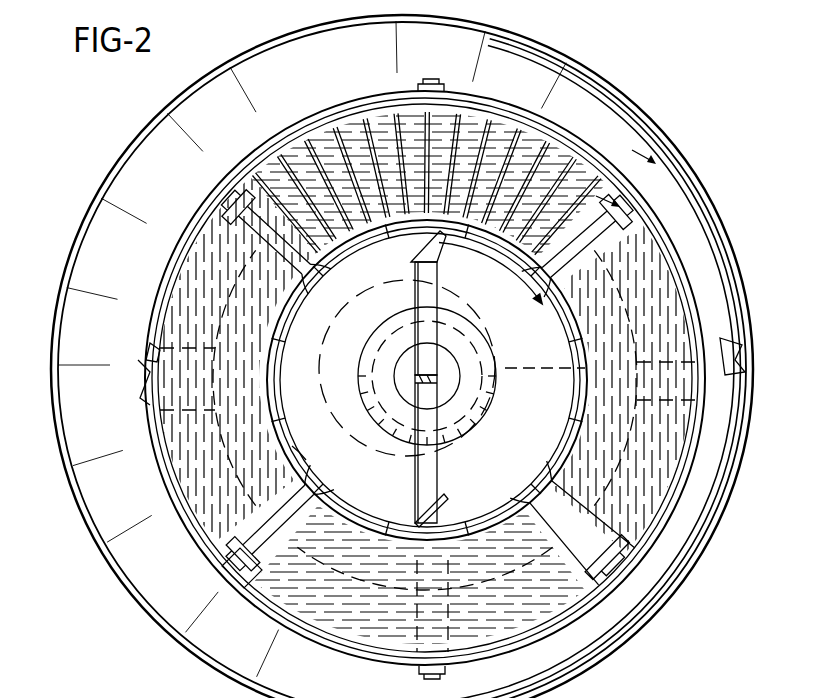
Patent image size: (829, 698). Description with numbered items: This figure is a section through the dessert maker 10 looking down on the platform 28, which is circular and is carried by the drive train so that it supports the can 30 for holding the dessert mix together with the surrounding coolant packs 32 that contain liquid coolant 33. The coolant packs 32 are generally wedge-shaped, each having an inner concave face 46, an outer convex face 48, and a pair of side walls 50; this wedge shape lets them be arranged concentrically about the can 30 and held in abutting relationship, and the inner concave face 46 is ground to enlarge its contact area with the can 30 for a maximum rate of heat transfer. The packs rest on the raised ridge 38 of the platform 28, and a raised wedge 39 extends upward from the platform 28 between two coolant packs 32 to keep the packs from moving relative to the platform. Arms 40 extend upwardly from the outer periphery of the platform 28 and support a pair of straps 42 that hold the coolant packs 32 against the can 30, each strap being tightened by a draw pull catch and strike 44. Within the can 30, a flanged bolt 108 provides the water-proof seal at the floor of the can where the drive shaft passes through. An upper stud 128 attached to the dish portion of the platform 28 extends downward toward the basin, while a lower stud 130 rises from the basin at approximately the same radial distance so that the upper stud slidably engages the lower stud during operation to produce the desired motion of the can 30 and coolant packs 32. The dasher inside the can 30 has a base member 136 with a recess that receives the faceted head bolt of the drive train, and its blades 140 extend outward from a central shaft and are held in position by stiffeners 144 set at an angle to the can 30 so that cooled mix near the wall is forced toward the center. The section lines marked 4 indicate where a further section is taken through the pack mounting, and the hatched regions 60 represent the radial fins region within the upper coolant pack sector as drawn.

The housing 10 is at (600, 74).
The coolant packs 32 is at (345, 130).
The radial fins 60 is at (478, 100).
The section line 4- 4 is at (617, 171).
The raised wedge 39 is at (280, 242).
The arms 40 is at (143, 347).
The draw pull catch and strike 44 is at (132, 372).
The stiffeners 144 is at (412, 264).
The base member 136 is at (452, 365).
The upper stud 128 is at (575, 355).
The lower stud 130 is at (558, 368).
The flanged bolt 108 is at (468, 422).
The can 30 is at (548, 505).
The inner concave face 46 is at (302, 445).
The raised ridge 38 is at (312, 488).
The blades 140 is at (427, 468).
The straps 42 is at (190, 535).
The platform 28 is at (238, 563).
The outer convex face 48 is at (322, 640).
The side walls 50 is at (572, 523).
The liquid coolant 33 is at (475, 625).